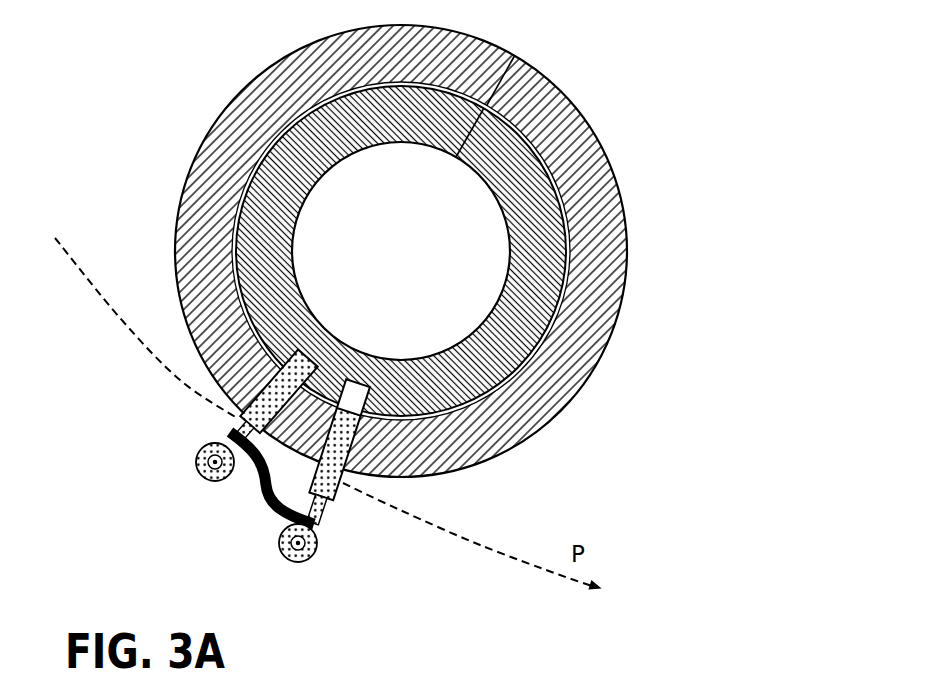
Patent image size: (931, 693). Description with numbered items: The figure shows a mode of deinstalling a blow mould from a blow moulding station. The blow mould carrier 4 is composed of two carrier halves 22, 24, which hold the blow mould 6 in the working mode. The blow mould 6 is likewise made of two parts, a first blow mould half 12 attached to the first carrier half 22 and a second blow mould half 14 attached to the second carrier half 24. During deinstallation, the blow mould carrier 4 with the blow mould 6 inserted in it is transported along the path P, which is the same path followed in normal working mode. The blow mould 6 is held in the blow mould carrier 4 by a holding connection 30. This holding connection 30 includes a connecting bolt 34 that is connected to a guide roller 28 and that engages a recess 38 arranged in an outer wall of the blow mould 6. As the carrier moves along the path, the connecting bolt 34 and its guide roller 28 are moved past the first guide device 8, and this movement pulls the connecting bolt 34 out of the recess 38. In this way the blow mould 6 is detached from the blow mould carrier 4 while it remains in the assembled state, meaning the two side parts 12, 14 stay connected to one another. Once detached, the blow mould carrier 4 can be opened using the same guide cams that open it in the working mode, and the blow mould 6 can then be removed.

The blow mould carrier 4 is at (383, 253).
The blow mould 6 is at (343, 178).
The first guide device 8 is at (257, 502).
The first blow mould half 12 is at (293, 223).
The second blow mould half 14 is at (483, 338).
The first carrier half 22 is at (197, 213).
The second carrier half 24 is at (568, 143).
The guide roller 28 is at (195, 468).
The holding connection 30 is at (283, 458).
The connecting bolt 34 is at (343, 477).
The recess 38 is at (450, 428).